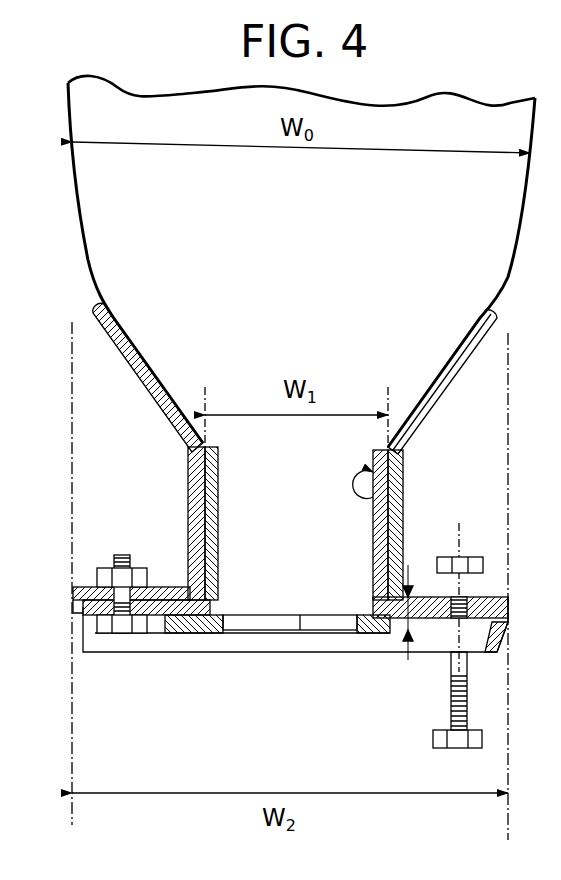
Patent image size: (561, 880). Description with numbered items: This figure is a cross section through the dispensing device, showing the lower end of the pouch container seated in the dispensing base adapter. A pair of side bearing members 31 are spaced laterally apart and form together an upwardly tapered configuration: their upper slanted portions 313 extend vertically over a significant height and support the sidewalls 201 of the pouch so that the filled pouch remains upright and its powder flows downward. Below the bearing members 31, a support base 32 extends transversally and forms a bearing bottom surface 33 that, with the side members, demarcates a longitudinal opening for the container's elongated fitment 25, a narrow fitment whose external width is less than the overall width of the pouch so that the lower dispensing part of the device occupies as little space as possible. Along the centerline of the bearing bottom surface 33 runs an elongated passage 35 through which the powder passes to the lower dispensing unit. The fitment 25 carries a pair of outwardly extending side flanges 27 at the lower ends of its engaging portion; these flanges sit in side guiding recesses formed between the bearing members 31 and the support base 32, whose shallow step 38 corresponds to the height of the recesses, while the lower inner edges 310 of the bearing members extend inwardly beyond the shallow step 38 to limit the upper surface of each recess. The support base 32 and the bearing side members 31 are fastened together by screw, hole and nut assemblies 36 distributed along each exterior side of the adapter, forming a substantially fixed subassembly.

The side bearing member 31 is at (130, 370).
The sidewall 201 is at (135, 348).
The upper slanted portion 313 is at (421, 398).
The elongated fitment 25 is at (398, 482).
The lower inner edge 310 is at (186, 597).
The bearing bottom surface 33 is at (229, 623).
The elongated passage 35 is at (302, 623).
The side flange 27 is at (190, 623).
The shallow step 38 is at (160, 613).
The screw/hole/nut assembly 36 is at (448, 698).
The support base 32 is at (66, 600).